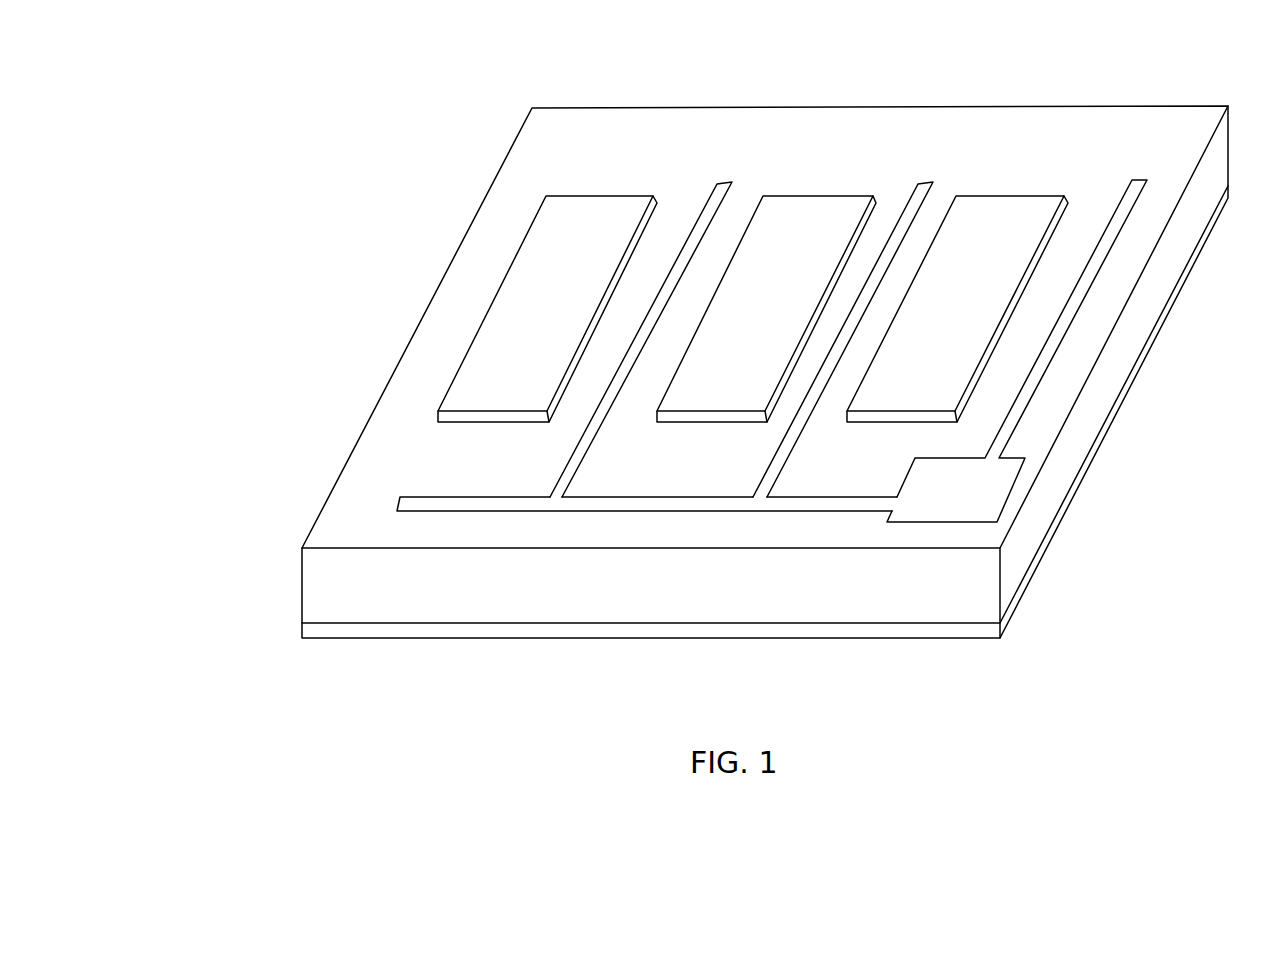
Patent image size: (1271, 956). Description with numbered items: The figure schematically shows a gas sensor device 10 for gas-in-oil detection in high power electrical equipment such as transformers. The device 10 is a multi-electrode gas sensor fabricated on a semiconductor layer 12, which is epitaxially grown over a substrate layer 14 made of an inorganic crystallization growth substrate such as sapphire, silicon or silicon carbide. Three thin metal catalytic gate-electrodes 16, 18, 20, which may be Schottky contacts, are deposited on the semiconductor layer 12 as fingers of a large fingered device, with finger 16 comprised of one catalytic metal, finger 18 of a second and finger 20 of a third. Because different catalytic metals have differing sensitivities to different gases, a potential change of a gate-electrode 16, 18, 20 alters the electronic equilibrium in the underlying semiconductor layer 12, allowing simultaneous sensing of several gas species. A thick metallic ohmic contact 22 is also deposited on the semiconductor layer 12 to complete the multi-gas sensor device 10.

The gas sensor device 10 is at (346, 166).
The semiconductor layer 12 is at (317, 571).
The substrate layer 14 is at (317, 633).
The catalytic gate-electrode 16 is at (582, 218).
The catalytic gate-electrode 18 is at (802, 217).
The catalytic gate-electrode 20 is at (992, 217).
The metallic ohmic contact 22 is at (983, 493).